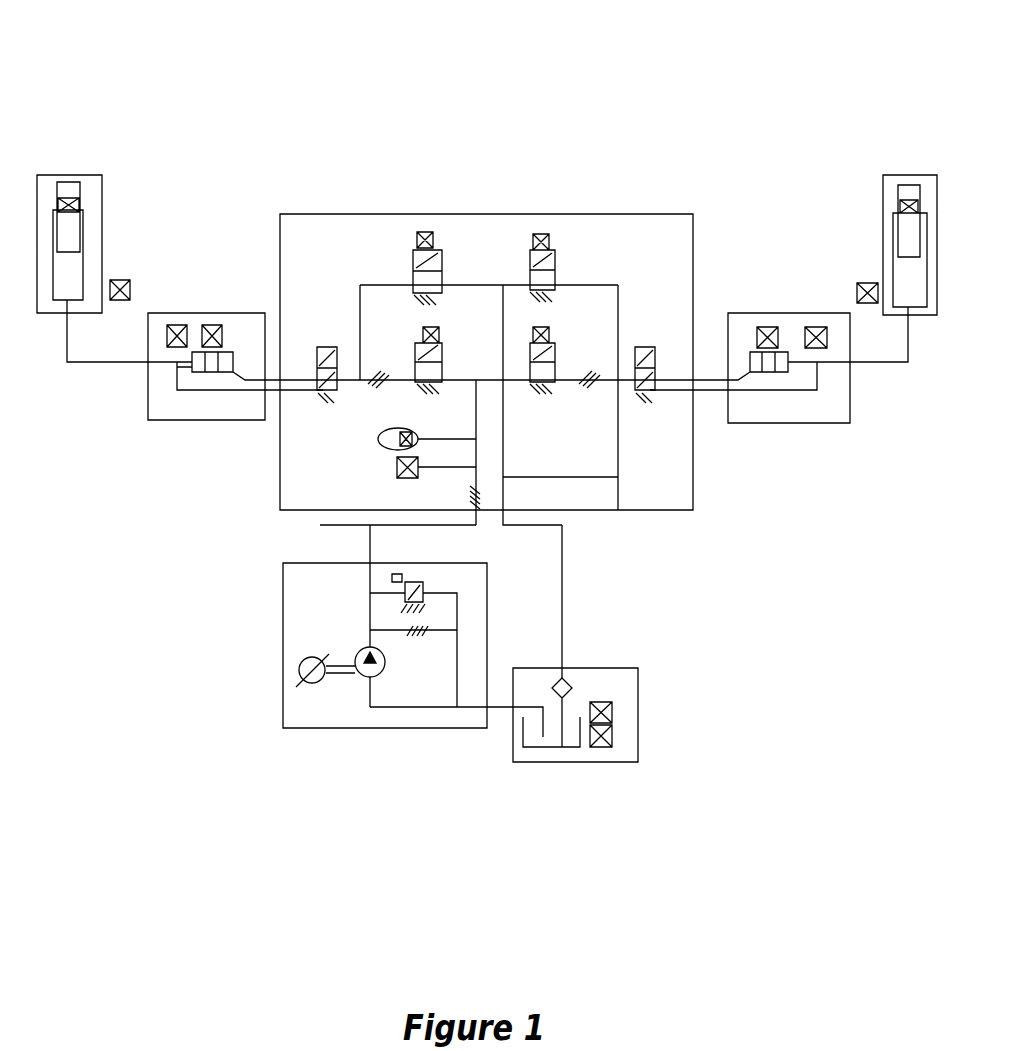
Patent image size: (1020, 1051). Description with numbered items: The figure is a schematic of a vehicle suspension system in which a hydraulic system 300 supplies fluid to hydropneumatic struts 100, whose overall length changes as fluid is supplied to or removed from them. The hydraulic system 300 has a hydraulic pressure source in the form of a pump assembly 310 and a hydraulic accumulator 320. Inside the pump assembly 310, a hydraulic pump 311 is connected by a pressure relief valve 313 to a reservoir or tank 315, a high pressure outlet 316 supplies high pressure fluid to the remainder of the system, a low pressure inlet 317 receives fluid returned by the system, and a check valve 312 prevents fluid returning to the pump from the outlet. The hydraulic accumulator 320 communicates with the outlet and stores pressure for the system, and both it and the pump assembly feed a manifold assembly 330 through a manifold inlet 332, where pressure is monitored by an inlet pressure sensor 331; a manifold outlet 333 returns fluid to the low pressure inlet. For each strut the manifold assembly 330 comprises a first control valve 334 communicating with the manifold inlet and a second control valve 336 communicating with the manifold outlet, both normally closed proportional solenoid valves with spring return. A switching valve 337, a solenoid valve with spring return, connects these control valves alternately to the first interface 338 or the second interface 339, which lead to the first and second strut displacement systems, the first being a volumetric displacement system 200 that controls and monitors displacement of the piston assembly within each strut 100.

The hydropneumatic strut 100 is at (111, 197).
The volumetric displacement system 200 is at (233, 345).
The hydraulic system 300 is at (524, 141).
The pump assembly 310 is at (377, 752).
The hydraulic pump 311 is at (300, 668).
The check valve 312 is at (473, 487).
The pressure relief valve 313 is at (400, 597).
The reservoir or tank 315 is at (565, 748).
The high pressure outlet 316 is at (443, 527).
The low pressure inlet 317 is at (563, 556).
The hydraulic accumulator 320 is at (362, 453).
The manifold assembly 330 is at (487, 237).
The inlet pressure sensor 331 is at (396, 466).
The manifold inlet 332 is at (475, 412).
The manifold outlet 333 is at (505, 493).
The first control valve 334 is at (417, 352).
The second control valve 336 is at (417, 250).
The switching valve 337 is at (317, 347).
The first interface 338 is at (273, 426).
The second interface 339 is at (268, 426).